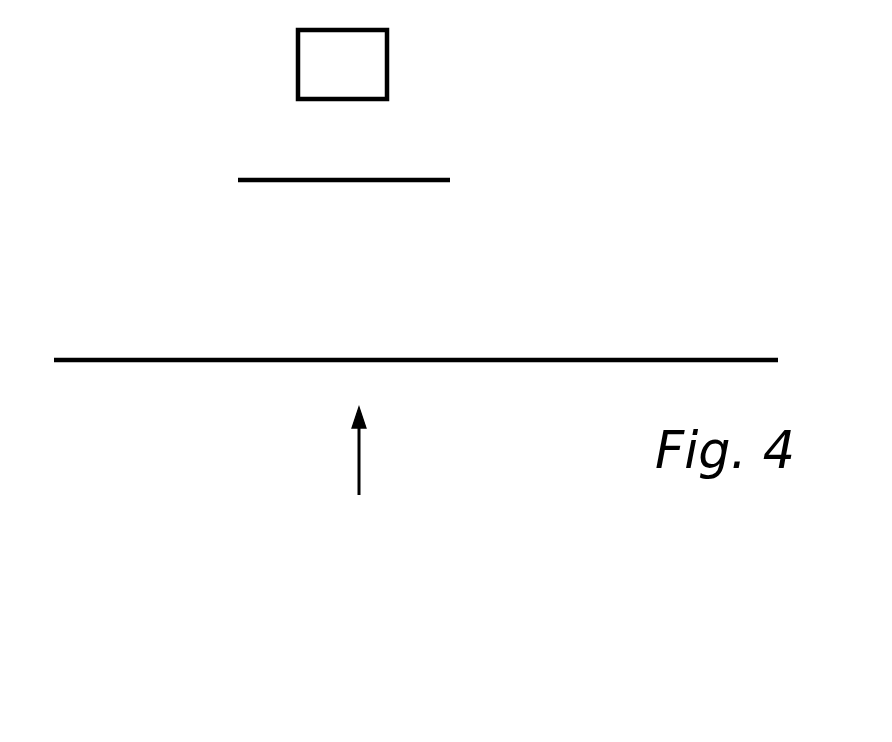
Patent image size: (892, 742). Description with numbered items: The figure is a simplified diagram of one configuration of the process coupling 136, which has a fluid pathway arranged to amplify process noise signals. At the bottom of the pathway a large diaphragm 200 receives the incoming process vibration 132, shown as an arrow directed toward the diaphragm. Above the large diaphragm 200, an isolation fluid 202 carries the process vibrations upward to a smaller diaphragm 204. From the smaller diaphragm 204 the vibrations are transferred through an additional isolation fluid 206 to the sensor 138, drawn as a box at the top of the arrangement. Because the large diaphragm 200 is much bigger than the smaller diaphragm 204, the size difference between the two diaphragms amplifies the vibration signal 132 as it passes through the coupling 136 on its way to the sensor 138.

The sensor 138 is at (388, 62).
The smaller diaphragm 204 is at (428, 178).
The additional isolation fluid 206 is at (358, 158).
The isolation fluid 202 is at (366, 288).
The process coupling 136 is at (605, 277).
The large diaphragm 200 is at (580, 358).
The process vibration 132 is at (360, 460).